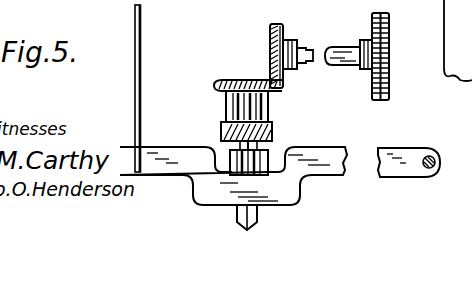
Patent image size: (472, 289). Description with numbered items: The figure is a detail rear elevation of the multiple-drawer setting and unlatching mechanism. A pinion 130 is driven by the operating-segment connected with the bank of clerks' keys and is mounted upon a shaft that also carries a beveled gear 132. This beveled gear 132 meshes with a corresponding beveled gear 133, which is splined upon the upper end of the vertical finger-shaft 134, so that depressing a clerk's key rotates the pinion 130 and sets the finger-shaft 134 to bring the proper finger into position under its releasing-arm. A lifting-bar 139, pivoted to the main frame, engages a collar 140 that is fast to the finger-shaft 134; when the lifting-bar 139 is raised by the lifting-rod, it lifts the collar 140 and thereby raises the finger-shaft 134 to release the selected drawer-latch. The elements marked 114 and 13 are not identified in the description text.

The vertical bar 114 is at (137, 63).
The pinion 130 is at (389, 36).
The beveled gear 132 is at (272, 32).
The beveled gear 133 is at (236, 81).
The finger-shaft 134 is at (337, 47).
The lifting-bar 139 is at (173, 153).
The collar 140 is at (270, 153).
The plate with hole 13 is at (435, 164).